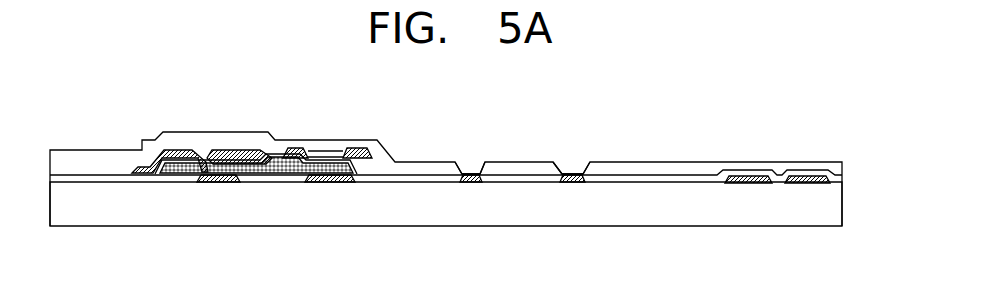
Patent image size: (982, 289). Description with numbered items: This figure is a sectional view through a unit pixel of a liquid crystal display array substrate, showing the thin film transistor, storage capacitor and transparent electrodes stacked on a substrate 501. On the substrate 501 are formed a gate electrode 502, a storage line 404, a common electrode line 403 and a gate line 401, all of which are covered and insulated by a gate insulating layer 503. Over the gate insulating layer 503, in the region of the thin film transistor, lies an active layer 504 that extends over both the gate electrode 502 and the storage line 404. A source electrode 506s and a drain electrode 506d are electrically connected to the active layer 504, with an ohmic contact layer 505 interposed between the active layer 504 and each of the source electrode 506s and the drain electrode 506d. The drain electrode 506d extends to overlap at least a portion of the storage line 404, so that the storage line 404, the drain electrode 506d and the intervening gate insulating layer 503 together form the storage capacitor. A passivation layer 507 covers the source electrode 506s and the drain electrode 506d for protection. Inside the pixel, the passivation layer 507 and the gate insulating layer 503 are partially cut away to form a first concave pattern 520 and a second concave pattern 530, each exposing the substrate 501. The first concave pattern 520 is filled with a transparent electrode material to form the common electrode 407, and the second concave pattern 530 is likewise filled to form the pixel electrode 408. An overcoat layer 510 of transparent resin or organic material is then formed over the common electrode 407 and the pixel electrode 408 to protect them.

The substrate 501 is at (98, 207).
The gate insulating layer 503 is at (64, 177).
The gate electrode 502 is at (216, 183).
The storage line 404 is at (330, 183).
The common electrode 407 is at (472, 177).
The pixel electrode 408 is at (572, 177).
The common electrode line 403 is at (745, 184).
The gate line 401 is at (802, 184).
The ohmic contact layer 505 is at (197, 150).
The active layer 504 is at (229, 150).
The source electrode 506s is at (163, 158).
The drain electrode 506d is at (322, 148).
The passivation layer 507 is at (677, 160).
The overcoat layer 510 is at (566, 163).
The first concave pattern 520 is at (463, 160).
The second concave pattern 530 is at (581, 160).